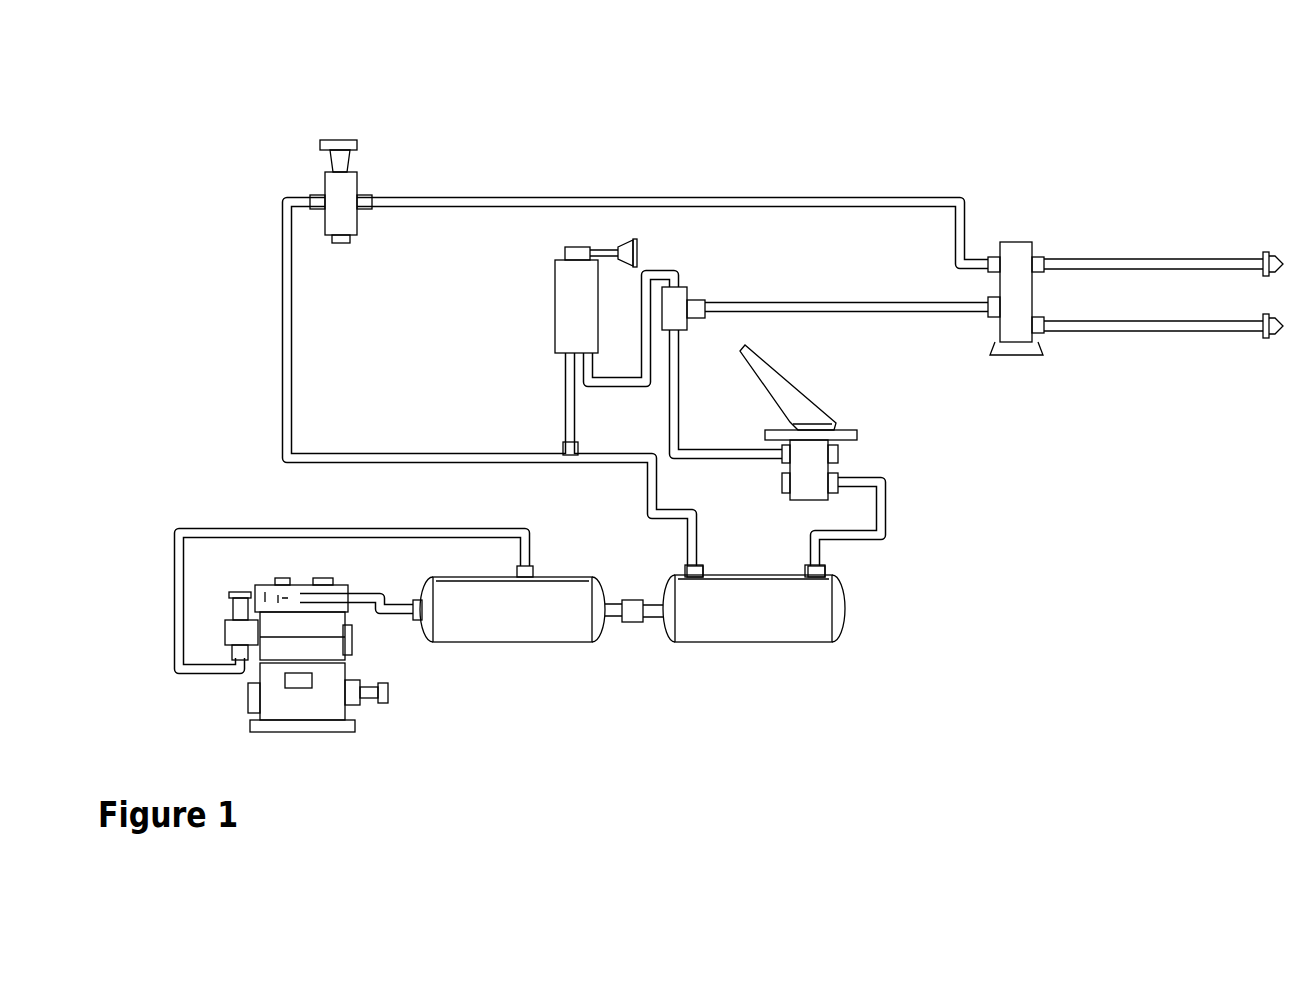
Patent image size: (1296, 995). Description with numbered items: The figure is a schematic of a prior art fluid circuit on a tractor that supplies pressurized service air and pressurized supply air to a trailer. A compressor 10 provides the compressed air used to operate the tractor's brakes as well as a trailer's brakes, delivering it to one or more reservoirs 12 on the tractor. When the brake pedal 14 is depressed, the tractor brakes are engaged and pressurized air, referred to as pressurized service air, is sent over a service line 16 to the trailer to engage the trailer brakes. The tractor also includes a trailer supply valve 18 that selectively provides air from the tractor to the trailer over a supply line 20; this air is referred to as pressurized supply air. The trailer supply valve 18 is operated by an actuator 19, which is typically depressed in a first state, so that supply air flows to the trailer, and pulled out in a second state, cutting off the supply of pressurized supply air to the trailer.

The compressor 10 is at (312, 725).
The reservoirs 12 is at (510, 637).
The brake pedal 14 is at (803, 415).
The service line 16 is at (1122, 327).
The trailer supply valve 18 is at (350, 188).
The actuator 19 is at (337, 140).
The supply line 20 is at (1167, 260).